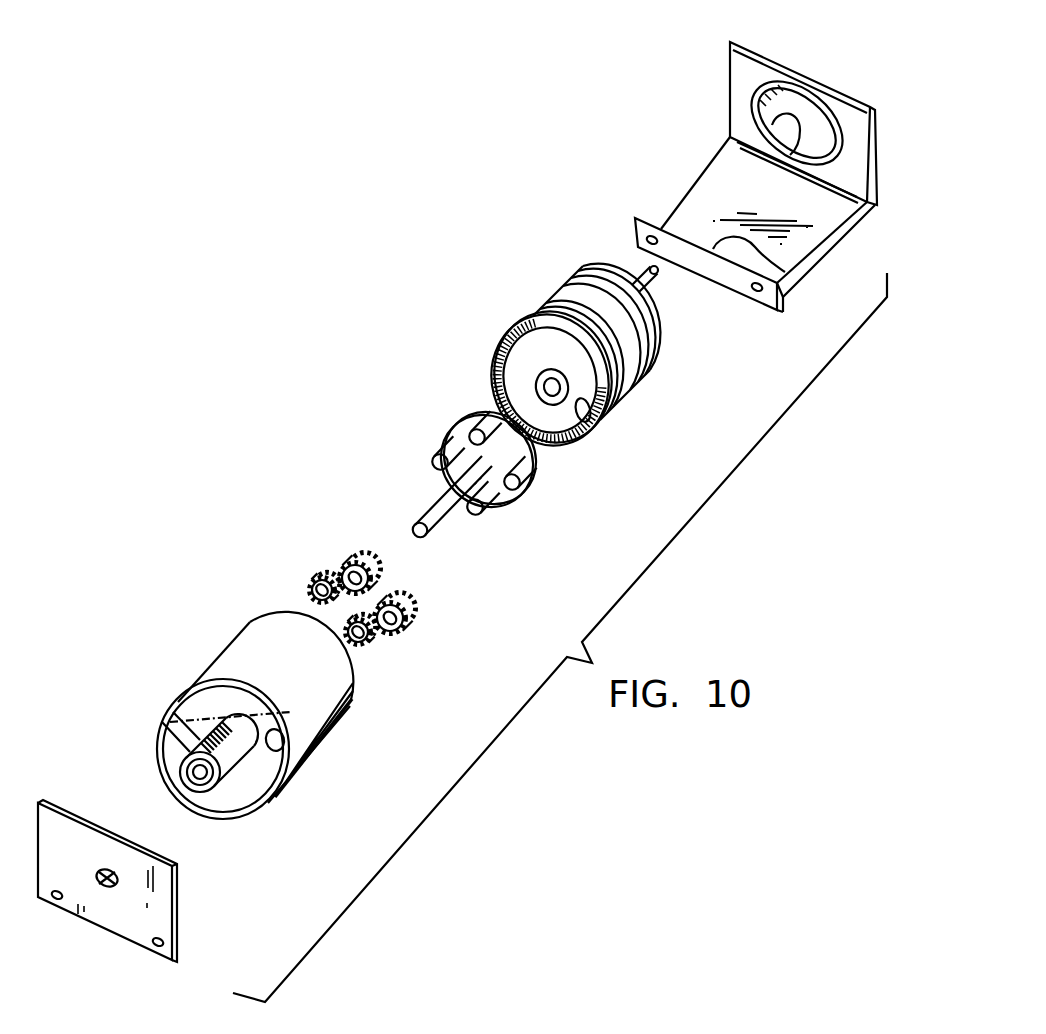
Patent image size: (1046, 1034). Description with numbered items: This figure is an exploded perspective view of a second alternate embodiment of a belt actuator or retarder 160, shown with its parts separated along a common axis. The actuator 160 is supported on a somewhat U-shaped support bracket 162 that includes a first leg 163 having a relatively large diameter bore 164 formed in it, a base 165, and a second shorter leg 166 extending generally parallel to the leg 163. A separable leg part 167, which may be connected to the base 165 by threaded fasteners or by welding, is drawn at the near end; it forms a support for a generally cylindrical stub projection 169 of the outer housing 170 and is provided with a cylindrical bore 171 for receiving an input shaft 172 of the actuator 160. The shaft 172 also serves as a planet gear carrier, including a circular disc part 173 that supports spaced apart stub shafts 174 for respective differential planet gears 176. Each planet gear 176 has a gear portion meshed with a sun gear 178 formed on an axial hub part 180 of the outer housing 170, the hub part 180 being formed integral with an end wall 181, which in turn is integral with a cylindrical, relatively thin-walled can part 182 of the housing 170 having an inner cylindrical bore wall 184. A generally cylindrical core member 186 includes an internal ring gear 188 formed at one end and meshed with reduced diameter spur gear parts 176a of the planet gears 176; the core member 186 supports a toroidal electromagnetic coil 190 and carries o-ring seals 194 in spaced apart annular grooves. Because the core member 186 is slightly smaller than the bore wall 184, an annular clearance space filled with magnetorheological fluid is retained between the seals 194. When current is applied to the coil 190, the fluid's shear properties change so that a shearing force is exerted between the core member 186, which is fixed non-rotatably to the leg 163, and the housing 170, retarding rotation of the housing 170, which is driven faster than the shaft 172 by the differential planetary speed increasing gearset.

The belt actuator or retarder 160 is at (483, 247).
The support bracket 162 is at (706, 169).
The first leg 163 is at (763, 57).
The bore 164 is at (796, 140).
The base 165 is at (780, 300).
The second shorter leg 166 is at (817, 268).
The separable leg part 167 is at (178, 905).
The stub projection 169 is at (180, 770).
The outer housing 170 is at (210, 666).
The bore 171 is at (104, 879).
The input shaft 172 is at (430, 516).
The disc part 173 is at (470, 426).
The stub shafts 174 is at (440, 452).
The differential planet gears 176 is at (350, 556).
The spur gear parts 176a is at (380, 558).
The sun gear 178 is at (240, 727).
The hub part 180 is at (238, 720).
The end wall 181 is at (268, 772).
The can part 182 is at (236, 639).
The bore wall 184 is at (290, 751).
The core member 186 is at (535, 312).
The internal ring gear 188 is at (598, 428).
The electromagnetic coil 190 is at (633, 376).
The o-ring seals 194 is at (580, 271).